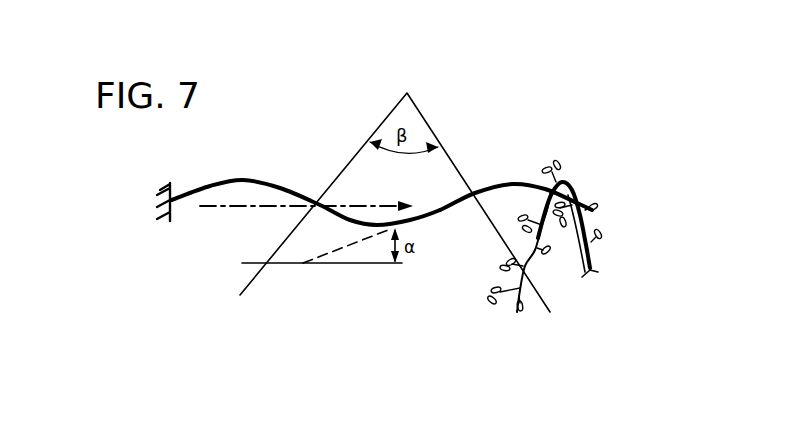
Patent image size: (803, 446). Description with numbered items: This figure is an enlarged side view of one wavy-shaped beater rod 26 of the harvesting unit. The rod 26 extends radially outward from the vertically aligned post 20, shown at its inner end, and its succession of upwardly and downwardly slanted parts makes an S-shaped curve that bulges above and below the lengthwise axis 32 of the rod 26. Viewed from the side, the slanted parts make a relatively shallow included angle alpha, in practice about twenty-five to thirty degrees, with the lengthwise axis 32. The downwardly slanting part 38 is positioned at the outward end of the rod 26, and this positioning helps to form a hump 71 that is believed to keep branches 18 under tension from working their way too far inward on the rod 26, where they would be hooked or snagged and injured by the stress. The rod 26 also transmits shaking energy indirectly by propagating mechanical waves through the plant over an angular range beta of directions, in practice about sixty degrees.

The post 20 is at (170, 185).
The rod 26 is at (243, 178).
The lengthwise axis 32 is at (225, 206).
The hump 71 is at (512, 183).
The downwardly slanting part 38 is at (587, 200).
The branches 18 is at (593, 258).